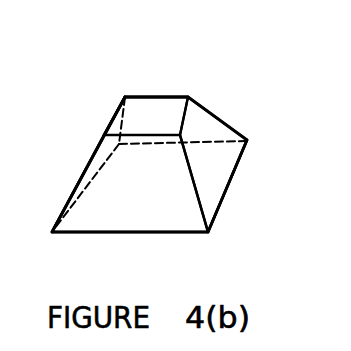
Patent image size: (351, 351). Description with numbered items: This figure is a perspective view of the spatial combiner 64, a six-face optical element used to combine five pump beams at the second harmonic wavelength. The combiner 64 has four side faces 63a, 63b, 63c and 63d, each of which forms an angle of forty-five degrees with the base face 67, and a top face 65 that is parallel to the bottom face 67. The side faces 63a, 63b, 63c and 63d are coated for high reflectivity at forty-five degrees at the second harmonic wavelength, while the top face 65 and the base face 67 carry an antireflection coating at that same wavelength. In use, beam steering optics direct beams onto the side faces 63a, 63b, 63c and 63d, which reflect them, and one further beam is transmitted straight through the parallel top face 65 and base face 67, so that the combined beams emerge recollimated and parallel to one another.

The side face 63a is at (207, 128).
The side face 63b is at (165, 212).
The side face 63c is at (82, 168).
The side face 63d is at (168, 98).
The spatial combiner 64 is at (113, 115).
The top face 65 is at (152, 112).
The base face 67 is at (220, 210).